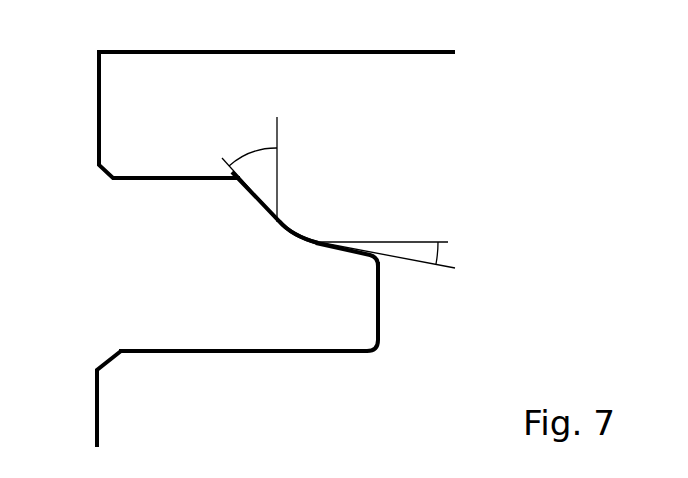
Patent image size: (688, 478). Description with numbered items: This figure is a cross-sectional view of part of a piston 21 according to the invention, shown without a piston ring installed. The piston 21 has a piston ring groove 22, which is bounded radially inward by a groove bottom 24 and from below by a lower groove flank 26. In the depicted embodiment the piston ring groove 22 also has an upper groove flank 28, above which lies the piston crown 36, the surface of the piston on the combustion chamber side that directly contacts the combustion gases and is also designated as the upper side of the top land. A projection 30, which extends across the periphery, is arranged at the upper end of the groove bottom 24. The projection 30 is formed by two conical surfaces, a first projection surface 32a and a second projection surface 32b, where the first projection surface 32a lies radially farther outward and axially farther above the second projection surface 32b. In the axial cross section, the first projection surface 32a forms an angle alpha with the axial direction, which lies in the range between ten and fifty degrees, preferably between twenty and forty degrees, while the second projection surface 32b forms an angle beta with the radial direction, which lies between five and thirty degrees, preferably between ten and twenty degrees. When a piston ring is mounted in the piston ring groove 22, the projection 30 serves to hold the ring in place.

The piston 21 is at (255, 149).
The piston crown 36 is at (267, 52).
The upper groove flank 28 is at (135, 178).
The first projection surface 32a is at (258, 204).
The second projection surface 32b is at (357, 255).
The projection 30 is at (302, 220).
The groove bottom 24 is at (378, 313).
The piston ring groove 22 is at (355, 297).
The lower groove flank 26 is at (193, 352).